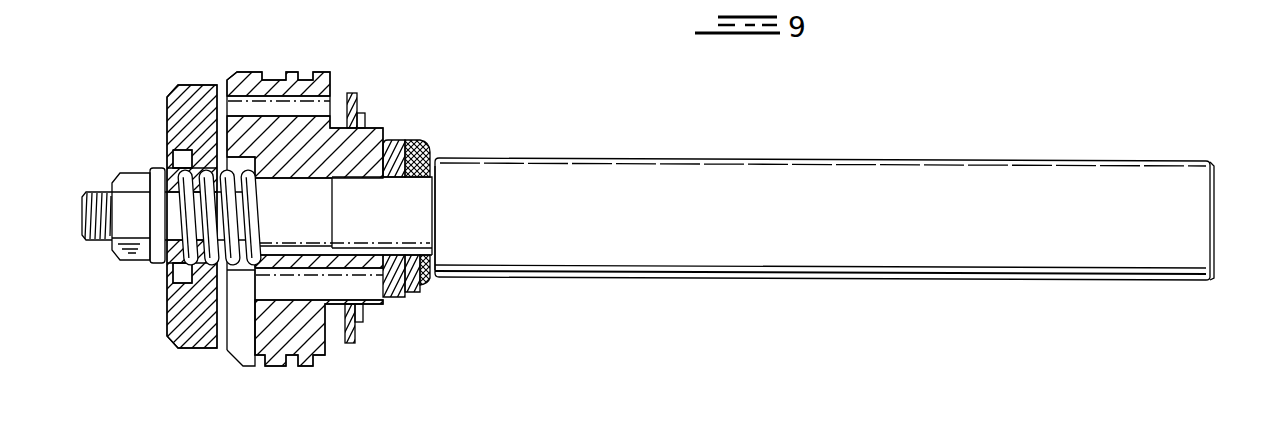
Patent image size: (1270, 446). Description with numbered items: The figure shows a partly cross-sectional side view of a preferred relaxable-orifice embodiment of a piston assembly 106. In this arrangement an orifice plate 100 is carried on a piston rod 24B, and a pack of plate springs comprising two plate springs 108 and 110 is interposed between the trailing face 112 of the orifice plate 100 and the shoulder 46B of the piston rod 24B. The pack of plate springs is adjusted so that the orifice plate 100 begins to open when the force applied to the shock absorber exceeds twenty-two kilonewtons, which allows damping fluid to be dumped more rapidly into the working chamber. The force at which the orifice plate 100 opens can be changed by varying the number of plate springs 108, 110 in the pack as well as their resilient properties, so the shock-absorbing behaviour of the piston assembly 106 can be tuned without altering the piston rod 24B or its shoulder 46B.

The piston assembly 106 is at (544, 143).
The orifice plate 100 is at (393, 298).
The plate spring 108 is at (412, 298).
The plate spring 110 is at (426, 293).
The trailing face 112 is at (431, 147).
The piston rod 24B is at (752, 260).
The shoulder 46B is at (434, 280).